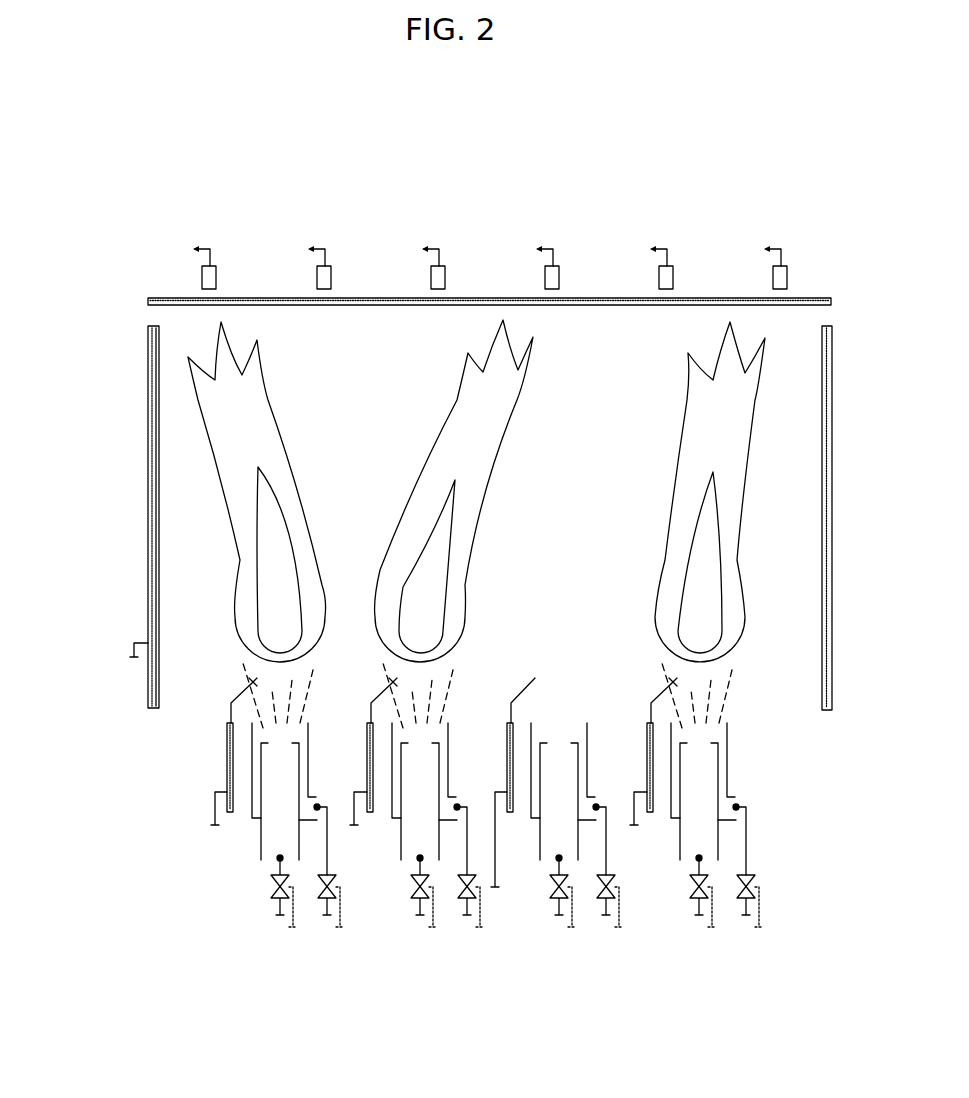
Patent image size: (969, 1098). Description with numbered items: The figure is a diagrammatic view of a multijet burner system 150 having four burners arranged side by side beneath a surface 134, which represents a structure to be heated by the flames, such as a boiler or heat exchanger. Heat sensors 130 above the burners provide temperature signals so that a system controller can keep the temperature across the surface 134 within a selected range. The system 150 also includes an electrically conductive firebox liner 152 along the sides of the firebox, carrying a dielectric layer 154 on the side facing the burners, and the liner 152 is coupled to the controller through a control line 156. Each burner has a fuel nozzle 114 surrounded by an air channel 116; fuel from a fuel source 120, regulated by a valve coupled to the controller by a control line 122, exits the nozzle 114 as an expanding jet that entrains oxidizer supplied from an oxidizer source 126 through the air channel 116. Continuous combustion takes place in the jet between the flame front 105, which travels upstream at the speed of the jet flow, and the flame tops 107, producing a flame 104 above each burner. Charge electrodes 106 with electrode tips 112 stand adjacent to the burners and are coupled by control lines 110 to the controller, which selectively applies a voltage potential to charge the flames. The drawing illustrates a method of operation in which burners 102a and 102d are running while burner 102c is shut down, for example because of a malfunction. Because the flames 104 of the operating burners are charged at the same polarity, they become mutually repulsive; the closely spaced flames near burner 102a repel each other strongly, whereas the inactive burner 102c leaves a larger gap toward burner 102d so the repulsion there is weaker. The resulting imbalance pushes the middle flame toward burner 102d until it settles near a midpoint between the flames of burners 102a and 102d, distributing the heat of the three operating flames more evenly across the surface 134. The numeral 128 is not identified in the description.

The multijet burner system 150 is at (110, 245).
The firebox liner 152 is at (148, 570).
The dielectric layer 154 is at (158, 537).
The control line 156 is at (134, 643).
The heat sensors 130 is at (674, 290).
The surface 134 is at (627, 298).
The flame tops 107 is at (290, 363).
The flame 104 is at (298, 531).
The flame front 105 is at (447, 680).
The burner 102a is at (225, 868).
The burner 102c is at (570, 680).
The burner 102d is at (605, 851).
The electrode tips 112 is at (227, 730).
The charge electrodes 106 is at (227, 770).
The control lines 110 is at (214, 815).
The fuel nozzle 114 is at (737, 801).
The air channel 116 is at (738, 773).
The fuel source 120 is at (669, 892).
The control line 122 is at (678, 921).
The oxidizer source 126 is at (735, 915).
The secondary valve actuator 128 is at (795, 905).